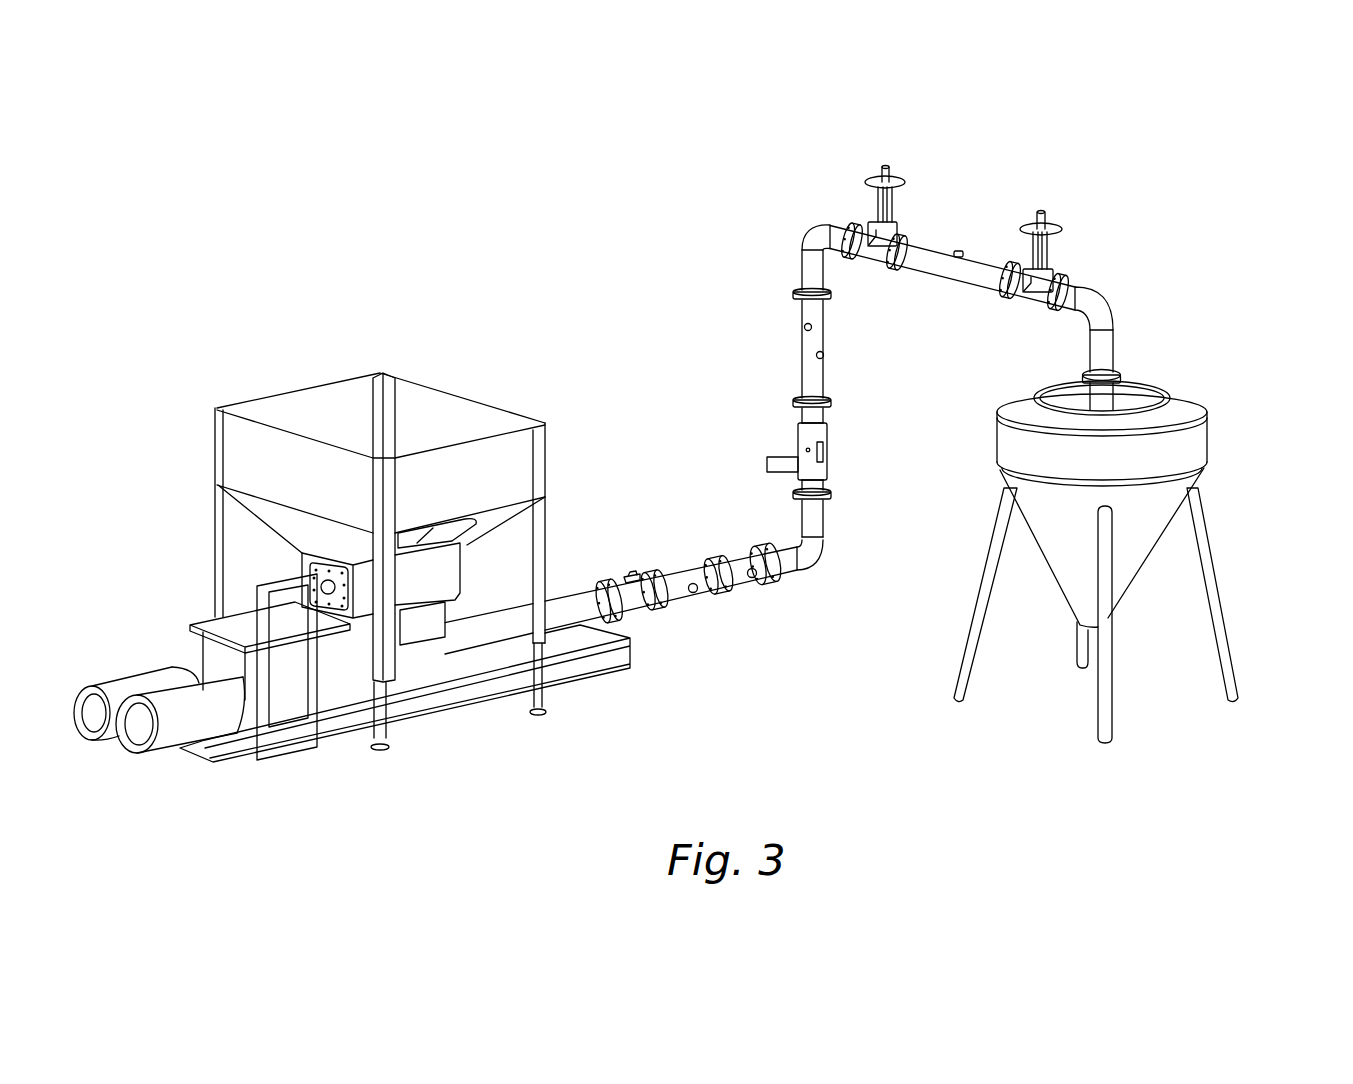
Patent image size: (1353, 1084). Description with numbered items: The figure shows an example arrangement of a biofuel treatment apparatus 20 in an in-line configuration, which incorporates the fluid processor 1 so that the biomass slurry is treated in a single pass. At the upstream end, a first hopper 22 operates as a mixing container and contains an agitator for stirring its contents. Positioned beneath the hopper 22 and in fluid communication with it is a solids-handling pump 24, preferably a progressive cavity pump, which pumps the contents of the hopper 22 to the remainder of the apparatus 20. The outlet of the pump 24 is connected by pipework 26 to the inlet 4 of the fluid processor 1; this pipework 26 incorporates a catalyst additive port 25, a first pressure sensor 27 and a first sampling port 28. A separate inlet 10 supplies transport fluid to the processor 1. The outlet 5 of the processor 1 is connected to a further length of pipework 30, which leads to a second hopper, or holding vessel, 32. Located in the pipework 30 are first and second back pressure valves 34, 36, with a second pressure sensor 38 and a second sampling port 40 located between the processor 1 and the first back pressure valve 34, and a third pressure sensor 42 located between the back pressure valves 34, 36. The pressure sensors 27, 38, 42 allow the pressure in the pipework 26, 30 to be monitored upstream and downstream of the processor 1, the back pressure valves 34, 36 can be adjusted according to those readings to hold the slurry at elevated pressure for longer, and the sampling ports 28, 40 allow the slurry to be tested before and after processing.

The biofuel treatment apparatus 20 is at (630, 262).
The first hopper 22 is at (341, 410).
The solids-handling pump 24 is at (183, 733).
The first pressure sensor 27 is at (630, 577).
The catalyst additive port 25 is at (697, 592).
The first sampling port 28 is at (756, 577).
The pipework 26 is at (823, 562).
The fluid processor 1 is at (876, 429).
The inlet 4 is at (832, 500).
The outlet 5 is at (828, 405).
The inlet 10 is at (781, 471).
The second sampling port 40 is at (805, 327).
The second pressure sensor 38 is at (824, 355).
The first back pressure valve 34 is at (864, 227).
The third pressure sensor 42 is at (958, 251).
The second back pressure valve 36 is at (1040, 276).
The pipework 30 is at (1100, 306).
The second hopper 32 is at (1180, 450).